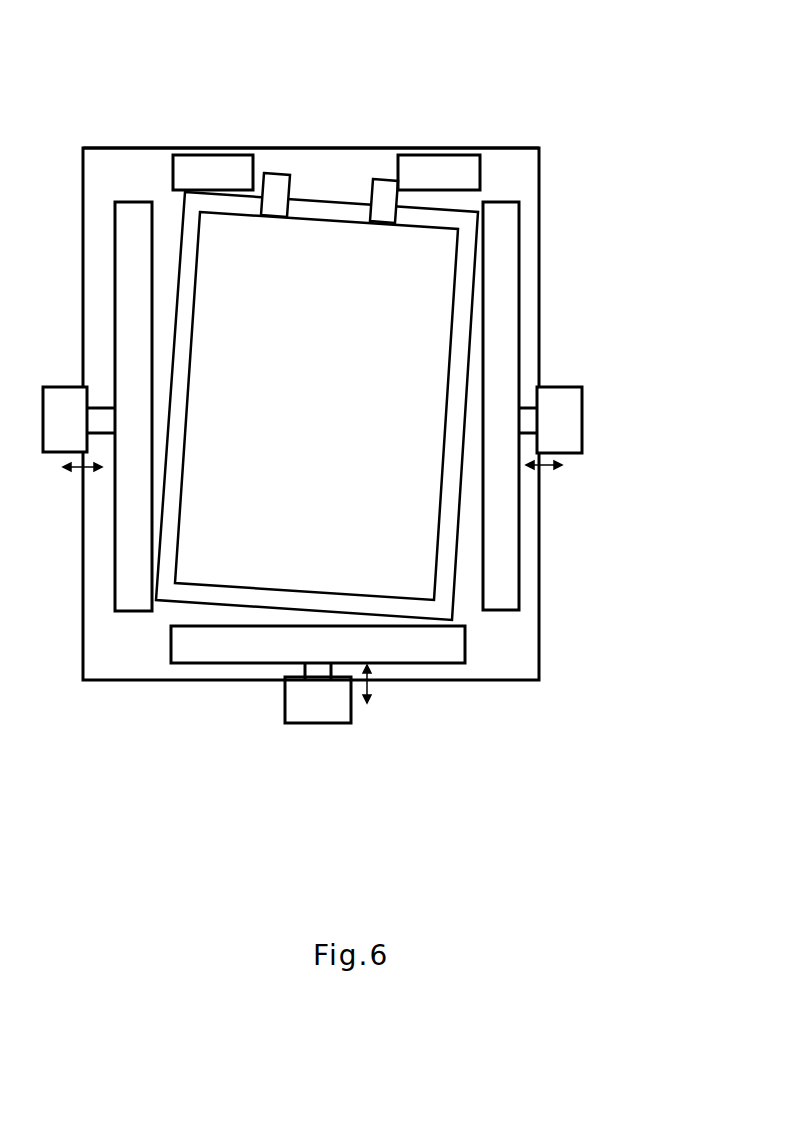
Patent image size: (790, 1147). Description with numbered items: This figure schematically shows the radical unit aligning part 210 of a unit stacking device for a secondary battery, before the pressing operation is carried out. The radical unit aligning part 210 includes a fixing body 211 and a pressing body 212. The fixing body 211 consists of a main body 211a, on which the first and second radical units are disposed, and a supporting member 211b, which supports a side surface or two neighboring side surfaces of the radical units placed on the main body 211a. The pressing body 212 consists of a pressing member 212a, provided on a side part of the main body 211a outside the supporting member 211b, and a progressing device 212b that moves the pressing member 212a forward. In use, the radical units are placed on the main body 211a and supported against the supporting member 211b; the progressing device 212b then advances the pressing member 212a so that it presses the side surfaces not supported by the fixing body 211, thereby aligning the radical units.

The radical unit aligning part 210 is at (573, 122).
The fixing body 211 is at (311, 99).
The main body 211a is at (507, 147).
The supporting member 211b is at (498, 53).
The pressing body 212 is at (603, 406).
The pressing member 212a is at (510, 308).
The progressing device 212b is at (563, 397).